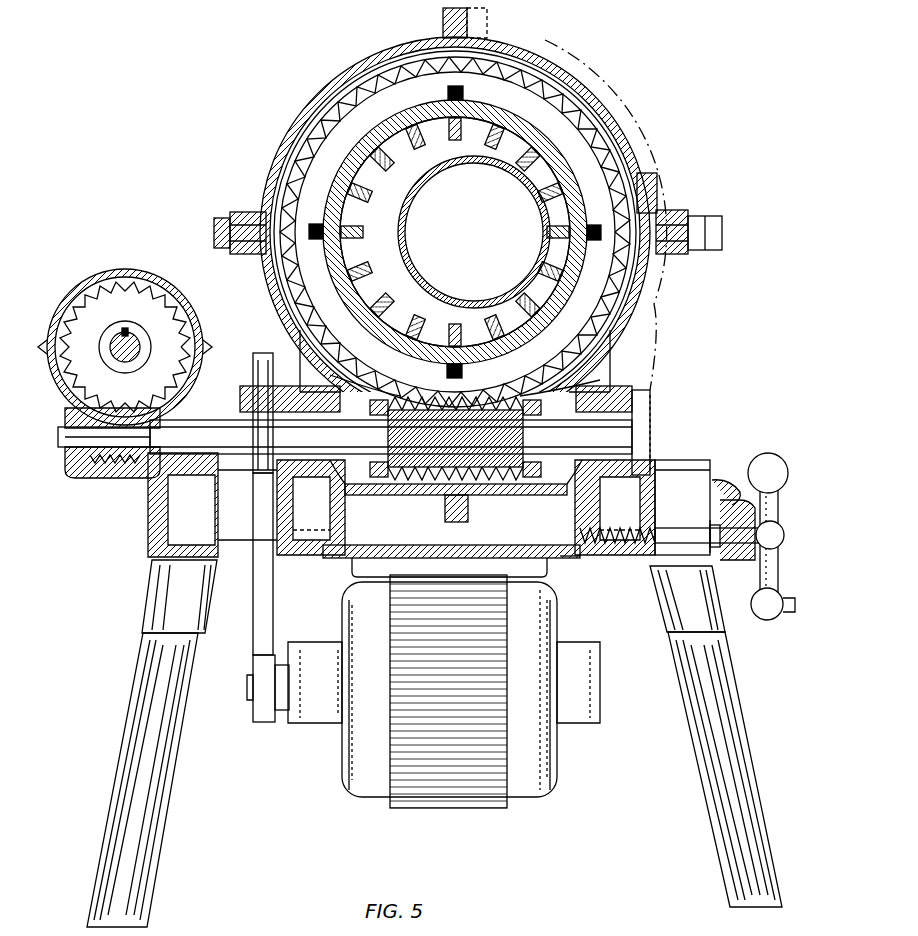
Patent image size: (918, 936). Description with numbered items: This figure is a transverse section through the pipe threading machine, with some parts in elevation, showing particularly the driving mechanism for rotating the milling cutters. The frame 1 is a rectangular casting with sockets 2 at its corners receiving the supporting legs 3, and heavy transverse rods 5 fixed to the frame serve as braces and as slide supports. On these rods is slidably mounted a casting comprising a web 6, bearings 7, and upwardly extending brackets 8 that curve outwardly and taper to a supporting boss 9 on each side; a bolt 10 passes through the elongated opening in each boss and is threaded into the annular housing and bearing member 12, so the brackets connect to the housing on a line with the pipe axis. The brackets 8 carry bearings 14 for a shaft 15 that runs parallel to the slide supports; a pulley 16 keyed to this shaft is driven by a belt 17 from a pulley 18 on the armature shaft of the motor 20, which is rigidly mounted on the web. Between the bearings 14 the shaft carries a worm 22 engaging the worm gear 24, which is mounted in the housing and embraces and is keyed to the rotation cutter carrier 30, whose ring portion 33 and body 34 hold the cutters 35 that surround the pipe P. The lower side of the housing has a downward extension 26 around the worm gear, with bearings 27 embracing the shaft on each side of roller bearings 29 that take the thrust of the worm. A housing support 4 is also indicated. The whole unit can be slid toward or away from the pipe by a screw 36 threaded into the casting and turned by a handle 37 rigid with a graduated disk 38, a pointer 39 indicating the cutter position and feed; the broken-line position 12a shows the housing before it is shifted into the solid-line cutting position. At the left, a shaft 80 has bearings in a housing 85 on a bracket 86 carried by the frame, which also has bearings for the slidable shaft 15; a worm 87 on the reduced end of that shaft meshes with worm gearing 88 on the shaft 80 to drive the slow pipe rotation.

The frame 1 is at (152, 552).
The sockets 2 is at (165, 614).
The supporting legs 3 is at (140, 700).
The housing support 4 is at (330, 385).
The rods 5 is at (355, 566).
The web 6 is at (565, 560).
The bearings 7 is at (466, 507).
The brackets 8 is at (262, 300).
The supporting boss 9 is at (248, 212).
The bolt 10 is at (226, 212).
The annular housing and bearing member 12 is at (602, 128).
The broken-line position of housing 12a is at (638, 168).
The bearings 14 is at (652, 394).
The shaft 15 is at (630, 434).
The pulley 16 is at (255, 370).
The belt 17 is at (254, 604).
The pulley 18 is at (250, 664).
The motor 20 is at (345, 748).
The worm 22 is at (516, 395).
The worm gear 24 is at (455, 232).
The downward extension 26 is at (380, 492).
The bearings 27 is at (375, 385).
The roller bearings 29 is at (420, 398).
The rotation cutter carrier 30 is at (575, 262).
The rotor ring 33 is at (352, 255).
The rotor body 34 is at (340, 270).
The cutters 35 is at (388, 185).
The screw 36 is at (668, 526).
The rotating handle 37 is at (775, 622).
The graduated disk 38 is at (718, 557).
The pointer 39 is at (730, 480).
The shaft 80 is at (135, 342).
The housing 85 is at (118, 272).
The bracket 86 is at (148, 522).
The worm 87 is at (130, 470).
The worm gearing 88 is at (125, 347).
The pipe P is at (440, 248).